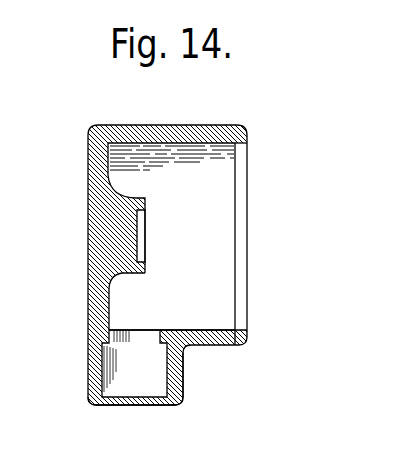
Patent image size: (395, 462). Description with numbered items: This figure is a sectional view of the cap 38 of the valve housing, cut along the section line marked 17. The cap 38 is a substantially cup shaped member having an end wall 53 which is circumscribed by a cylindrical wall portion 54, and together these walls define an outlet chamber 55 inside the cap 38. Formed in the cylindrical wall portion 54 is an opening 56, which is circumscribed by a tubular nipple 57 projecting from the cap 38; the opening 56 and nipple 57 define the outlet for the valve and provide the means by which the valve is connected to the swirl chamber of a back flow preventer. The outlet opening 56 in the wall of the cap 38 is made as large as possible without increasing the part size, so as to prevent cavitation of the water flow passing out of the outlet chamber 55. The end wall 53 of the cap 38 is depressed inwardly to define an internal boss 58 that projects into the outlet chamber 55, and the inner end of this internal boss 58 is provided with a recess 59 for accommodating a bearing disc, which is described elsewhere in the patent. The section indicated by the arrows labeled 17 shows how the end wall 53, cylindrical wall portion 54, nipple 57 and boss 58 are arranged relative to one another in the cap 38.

The cap 38 is at (240, 118).
The end wall 53 is at (101, 261).
The cylindrical wall portion 54 is at (210, 347).
The outlet chamber 55 is at (211, 257).
The opening 56 is at (128, 357).
The tubular nipple 57 is at (184, 386).
The internal boss 58 is at (128, 200).
The recess 59 is at (143, 232).
The section line 17- 17 is at (88, 333).